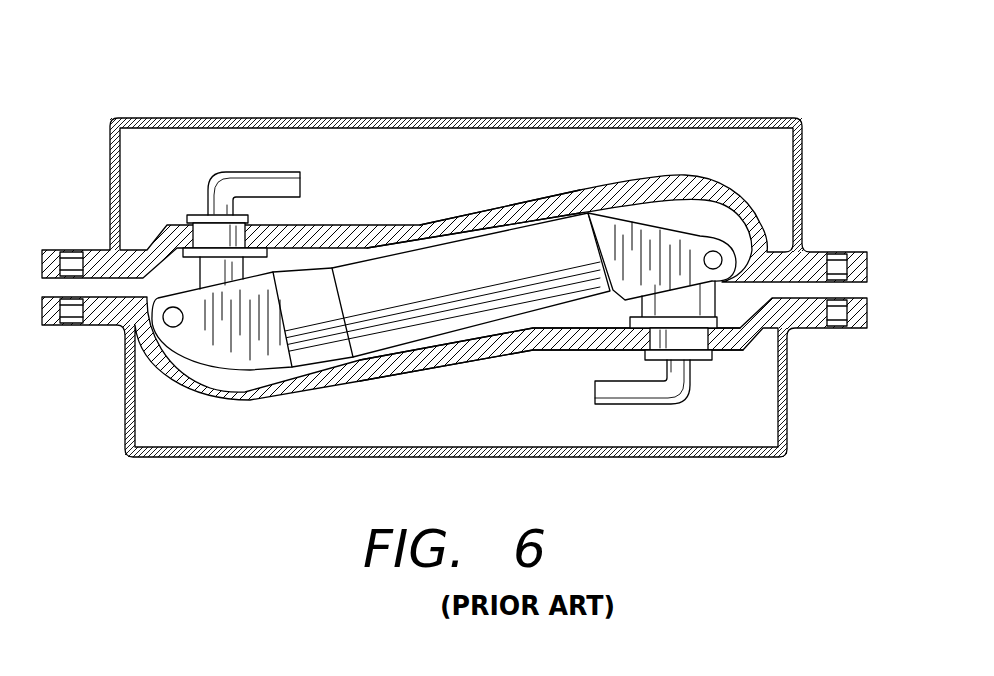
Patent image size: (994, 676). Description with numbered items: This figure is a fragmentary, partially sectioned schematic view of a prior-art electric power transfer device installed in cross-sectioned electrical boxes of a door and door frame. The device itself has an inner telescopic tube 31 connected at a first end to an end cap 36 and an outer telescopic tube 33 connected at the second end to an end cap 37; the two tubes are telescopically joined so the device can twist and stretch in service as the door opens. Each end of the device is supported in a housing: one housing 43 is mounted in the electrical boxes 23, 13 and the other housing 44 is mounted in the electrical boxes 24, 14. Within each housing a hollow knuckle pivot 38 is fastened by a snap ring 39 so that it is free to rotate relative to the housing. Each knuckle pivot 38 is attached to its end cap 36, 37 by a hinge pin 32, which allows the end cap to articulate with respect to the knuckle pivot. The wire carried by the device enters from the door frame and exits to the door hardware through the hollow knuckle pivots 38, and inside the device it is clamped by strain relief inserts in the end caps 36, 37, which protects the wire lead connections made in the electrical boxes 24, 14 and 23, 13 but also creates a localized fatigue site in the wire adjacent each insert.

The electrical box 13 is at (454, 416).
The electrical box 14 is at (454, 161).
The electrical box 23 is at (543, 457).
The electrical box 24 is at (357, 120).
The inner telescopic tube 31 is at (337, 347).
The hinge pin 32 is at (167, 323).
The outer telescopic tube 33 is at (460, 247).
The end cap 36 is at (233, 370).
The end cap 37 is at (700, 240).
The hollow knuckle pivot 38 is at (200, 265).
The snap ring 39 is at (200, 213).
The housing 43 is at (557, 345).
The housing 44 is at (520, 198).